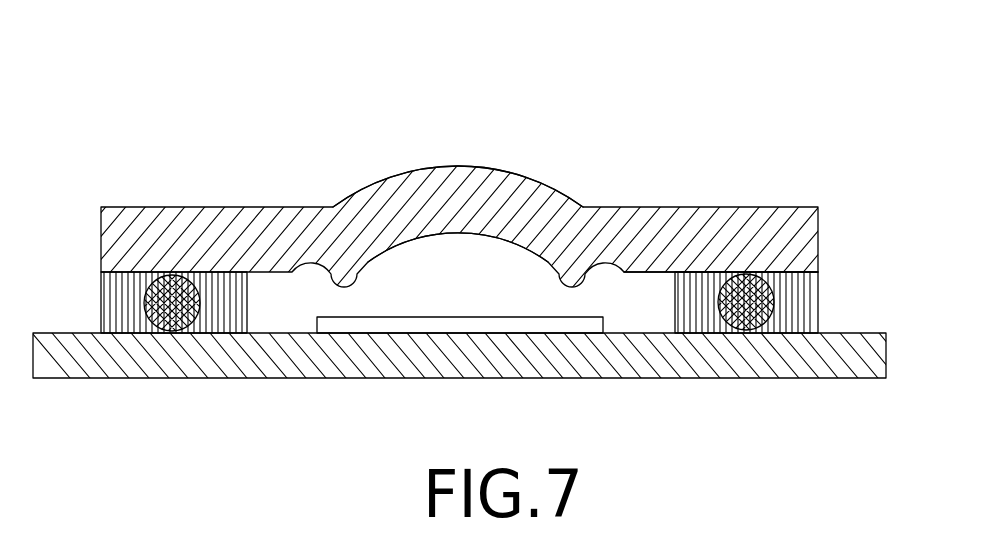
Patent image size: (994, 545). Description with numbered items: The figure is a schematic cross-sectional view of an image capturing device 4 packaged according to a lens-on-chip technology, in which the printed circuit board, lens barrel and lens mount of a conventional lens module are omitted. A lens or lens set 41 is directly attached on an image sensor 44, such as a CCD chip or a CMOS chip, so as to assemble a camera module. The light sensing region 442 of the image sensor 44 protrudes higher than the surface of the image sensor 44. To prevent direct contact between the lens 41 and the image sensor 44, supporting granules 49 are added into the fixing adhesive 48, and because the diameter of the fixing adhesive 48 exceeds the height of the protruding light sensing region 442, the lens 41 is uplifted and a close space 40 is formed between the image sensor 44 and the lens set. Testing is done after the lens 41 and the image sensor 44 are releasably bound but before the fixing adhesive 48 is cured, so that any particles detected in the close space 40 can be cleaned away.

The image capturing device 4 is at (675, 70).
The close space 40 is at (388, 295).
The lens 41 is at (495, 205).
The supporting granules 49 is at (778, 262).
The fixing adhesive 48 is at (795, 317).
The image sensor 44 is at (715, 358).
The light sensing region 442 is at (390, 325).